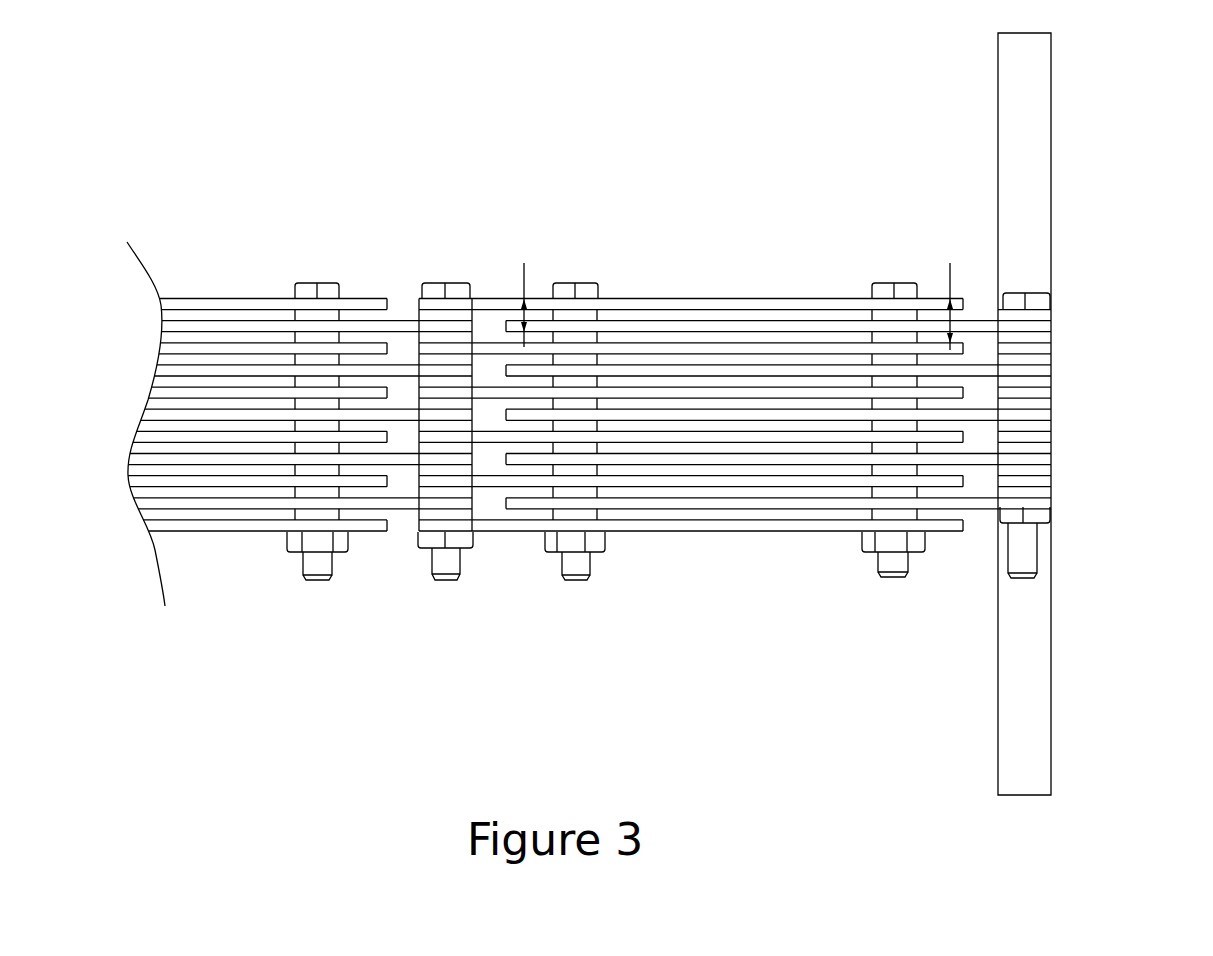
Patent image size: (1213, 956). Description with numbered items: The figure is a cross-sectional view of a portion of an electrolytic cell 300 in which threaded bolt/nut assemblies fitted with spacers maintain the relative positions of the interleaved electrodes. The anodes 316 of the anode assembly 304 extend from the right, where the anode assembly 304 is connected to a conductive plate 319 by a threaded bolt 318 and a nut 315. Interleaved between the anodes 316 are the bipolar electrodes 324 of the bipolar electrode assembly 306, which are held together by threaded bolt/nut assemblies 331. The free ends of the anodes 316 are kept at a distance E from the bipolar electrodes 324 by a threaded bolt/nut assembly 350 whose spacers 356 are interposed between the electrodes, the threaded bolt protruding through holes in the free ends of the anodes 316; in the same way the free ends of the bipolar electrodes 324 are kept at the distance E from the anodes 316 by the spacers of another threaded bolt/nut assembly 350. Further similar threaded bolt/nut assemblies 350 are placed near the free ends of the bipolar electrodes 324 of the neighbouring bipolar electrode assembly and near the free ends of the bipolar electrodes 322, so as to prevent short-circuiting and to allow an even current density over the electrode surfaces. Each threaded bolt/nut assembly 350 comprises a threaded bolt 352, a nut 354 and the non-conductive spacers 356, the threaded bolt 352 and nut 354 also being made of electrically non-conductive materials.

The electrolytic cell 300 is at (679, 142).
The anode assembly 304 is at (1052, 414).
The bipolar electrode assembly 306 is at (438, 248).
The nut 315 is at (1038, 515).
The anodes 316 is at (823, 325).
The threaded bolt 318 is at (1033, 303).
The conductive plate 319 is at (1023, 153).
The bipolar electrodes 322 is at (347, 373).
The bipolar electrodes 324 is at (217, 352).
The threaded bolt/nut assemblies 331 is at (453, 291).
The threaded bolt/nut assembly 350 is at (318, 580).
The threaded bolt 352 is at (573, 562).
The nut 354 is at (560, 543).
The spacers 356 is at (590, 468).